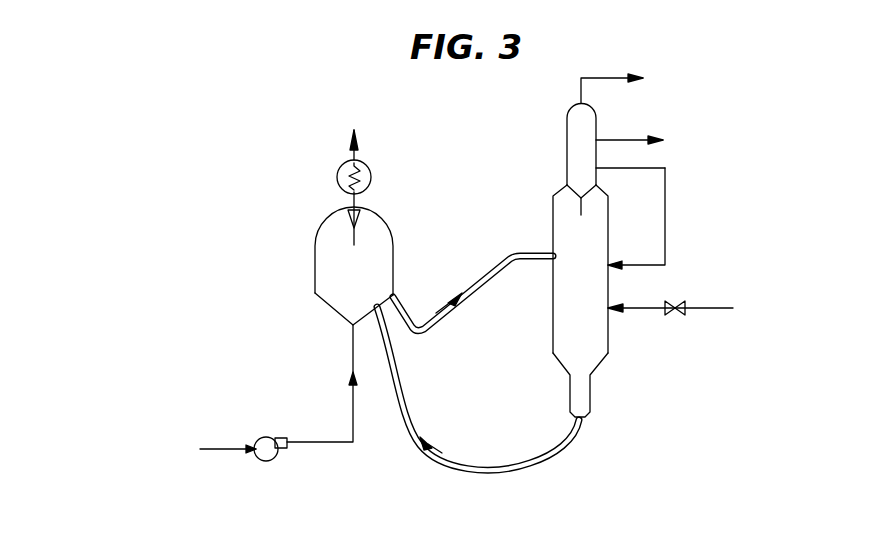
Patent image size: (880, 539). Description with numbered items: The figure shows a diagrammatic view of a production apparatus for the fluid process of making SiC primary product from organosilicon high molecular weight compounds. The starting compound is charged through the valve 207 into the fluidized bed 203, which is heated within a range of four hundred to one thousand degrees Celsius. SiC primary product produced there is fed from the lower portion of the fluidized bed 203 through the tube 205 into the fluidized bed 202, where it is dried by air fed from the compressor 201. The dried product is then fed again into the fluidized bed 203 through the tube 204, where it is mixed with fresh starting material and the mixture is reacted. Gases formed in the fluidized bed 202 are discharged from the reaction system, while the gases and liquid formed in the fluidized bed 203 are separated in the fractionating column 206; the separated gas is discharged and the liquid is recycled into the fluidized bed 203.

The compressor 201 is at (273, 458).
The fluidized bed 202 is at (325, 283).
The fluidized bed 203 is at (553, 308).
The tube 204 is at (466, 303).
The tube 205 is at (478, 468).
The fractionating column 206 is at (567, 131).
The valve 207 is at (673, 316).